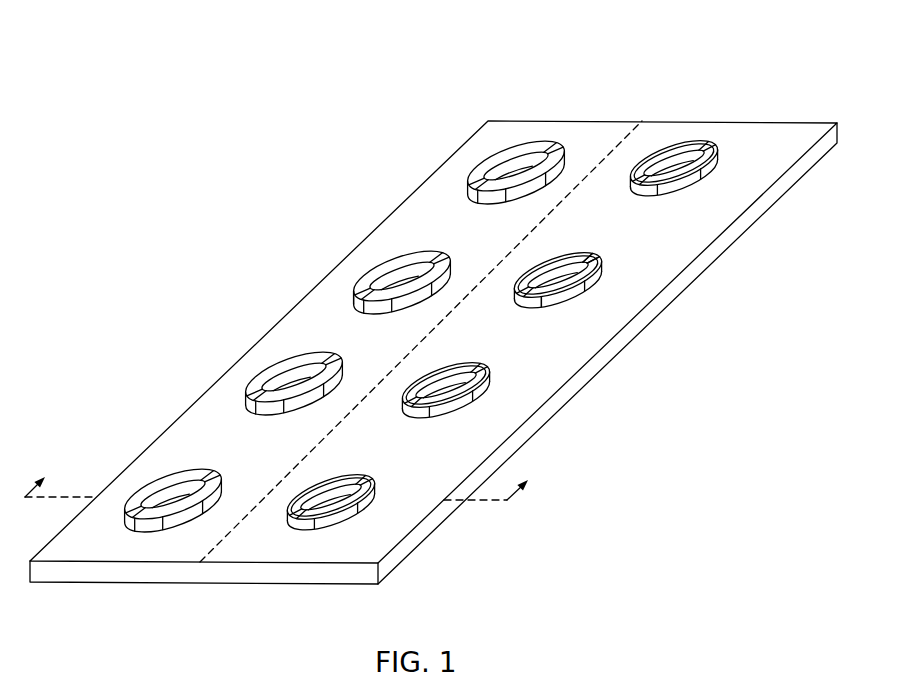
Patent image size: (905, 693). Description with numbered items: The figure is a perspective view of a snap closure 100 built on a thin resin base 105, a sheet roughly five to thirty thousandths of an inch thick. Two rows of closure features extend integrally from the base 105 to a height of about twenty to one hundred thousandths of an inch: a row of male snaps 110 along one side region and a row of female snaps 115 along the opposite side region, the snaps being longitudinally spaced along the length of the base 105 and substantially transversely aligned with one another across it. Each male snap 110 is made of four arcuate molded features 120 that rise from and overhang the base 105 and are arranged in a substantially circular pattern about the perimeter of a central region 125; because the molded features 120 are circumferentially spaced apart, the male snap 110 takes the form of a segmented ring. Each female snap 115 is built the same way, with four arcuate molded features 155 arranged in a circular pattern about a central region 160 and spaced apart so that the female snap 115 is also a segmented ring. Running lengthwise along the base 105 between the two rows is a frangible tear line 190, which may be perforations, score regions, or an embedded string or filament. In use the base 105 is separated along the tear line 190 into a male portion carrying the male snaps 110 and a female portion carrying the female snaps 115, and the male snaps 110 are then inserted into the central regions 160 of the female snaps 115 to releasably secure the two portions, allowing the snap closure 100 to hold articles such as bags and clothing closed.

The snap closure 100 is at (288, 79).
The resin base 105 is at (750, 207).
The male snap 110 is at (580, 306).
The female snap 115 is at (358, 276).
The arcuate molded feature 120 is at (555, 302).
The central region 125 is at (578, 270).
The arcuate molded feature 155 is at (357, 295).
The central region 160 is at (403, 267).
The frangible tear line 190 is at (642, 122).